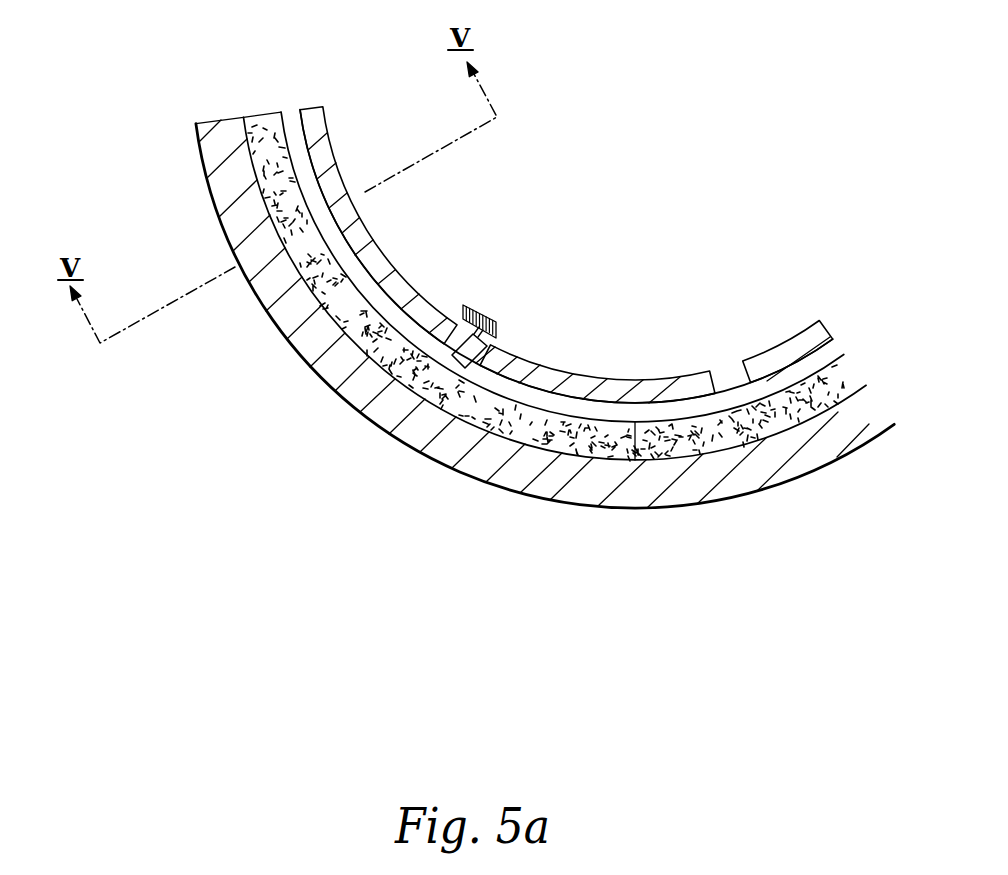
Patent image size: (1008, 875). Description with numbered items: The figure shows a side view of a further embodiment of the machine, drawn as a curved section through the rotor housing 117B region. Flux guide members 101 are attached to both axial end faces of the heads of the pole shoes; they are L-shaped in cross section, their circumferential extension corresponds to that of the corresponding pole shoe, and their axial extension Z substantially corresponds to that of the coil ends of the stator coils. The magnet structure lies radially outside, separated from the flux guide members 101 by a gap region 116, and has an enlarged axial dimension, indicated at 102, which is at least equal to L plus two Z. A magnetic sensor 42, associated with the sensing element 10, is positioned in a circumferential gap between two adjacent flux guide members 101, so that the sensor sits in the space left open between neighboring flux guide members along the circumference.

The sensor 10 is at (472, 304).
The magnetic sensor 42 is at (477, 349).
The flux guide member 101 is at (410, 284).
The axial dimension H of magnet structure 102 is at (740, 417).
The air gap 116 is at (286, 121).
The rotor housing 117B is at (818, 453).